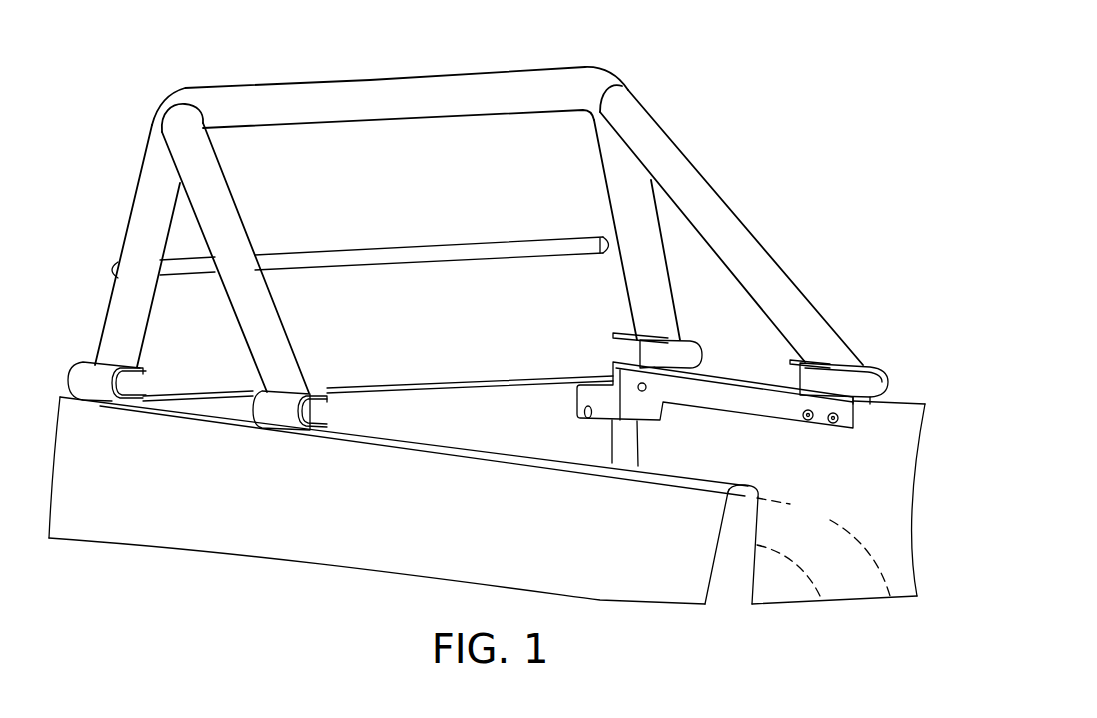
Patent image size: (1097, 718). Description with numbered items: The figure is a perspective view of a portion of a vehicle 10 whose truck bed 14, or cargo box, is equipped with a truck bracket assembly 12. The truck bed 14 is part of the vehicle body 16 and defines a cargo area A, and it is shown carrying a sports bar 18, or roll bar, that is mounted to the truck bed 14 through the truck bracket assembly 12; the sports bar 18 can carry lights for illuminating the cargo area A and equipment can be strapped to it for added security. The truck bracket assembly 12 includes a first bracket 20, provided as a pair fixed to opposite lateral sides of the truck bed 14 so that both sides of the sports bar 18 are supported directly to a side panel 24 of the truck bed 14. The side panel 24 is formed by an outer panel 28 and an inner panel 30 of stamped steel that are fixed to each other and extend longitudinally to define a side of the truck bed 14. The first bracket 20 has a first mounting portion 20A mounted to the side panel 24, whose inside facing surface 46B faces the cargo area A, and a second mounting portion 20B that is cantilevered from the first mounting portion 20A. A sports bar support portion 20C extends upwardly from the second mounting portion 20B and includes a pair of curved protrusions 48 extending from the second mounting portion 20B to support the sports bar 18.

The vehicle 10 is at (686, 30).
The truck bracket assembly 12 is at (877, 322).
The truck bed 14 is at (463, 456).
The vehicle body 16 is at (456, 380).
The sports bar 18 is at (297, 73).
The first bracket 20 is at (72, 368).
The first mounting portion 20A is at (715, 400).
The second mounting portion 20B is at (132, 402).
The sports bar support portion 20C is at (141, 378).
The side panel 24 is at (547, 455).
The outer panel 28 is at (644, 554).
The inner panel 30 is at (862, 508).
The inside facing surface 46B is at (776, 404).
The curved protrusions 48 is at (97, 386).
The cargo area A is at (828, 488).